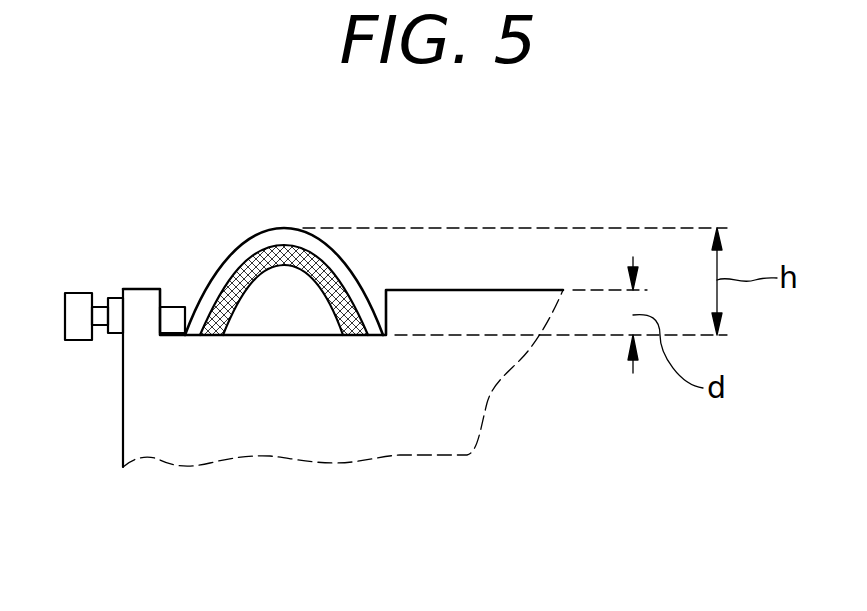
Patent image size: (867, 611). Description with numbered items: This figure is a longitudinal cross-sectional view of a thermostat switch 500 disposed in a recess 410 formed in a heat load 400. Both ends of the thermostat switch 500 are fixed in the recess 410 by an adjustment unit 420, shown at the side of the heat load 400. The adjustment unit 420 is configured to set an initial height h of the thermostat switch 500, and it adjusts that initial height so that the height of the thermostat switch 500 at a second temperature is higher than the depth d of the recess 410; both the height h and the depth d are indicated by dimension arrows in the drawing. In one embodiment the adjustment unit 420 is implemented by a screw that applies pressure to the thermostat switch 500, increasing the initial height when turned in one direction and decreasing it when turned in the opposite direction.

The heat load 400 is at (243, 410).
The recess 410 is at (288, 307).
The adjustment unit 420 is at (75, 307).
The thermostat switch 500 is at (252, 245).